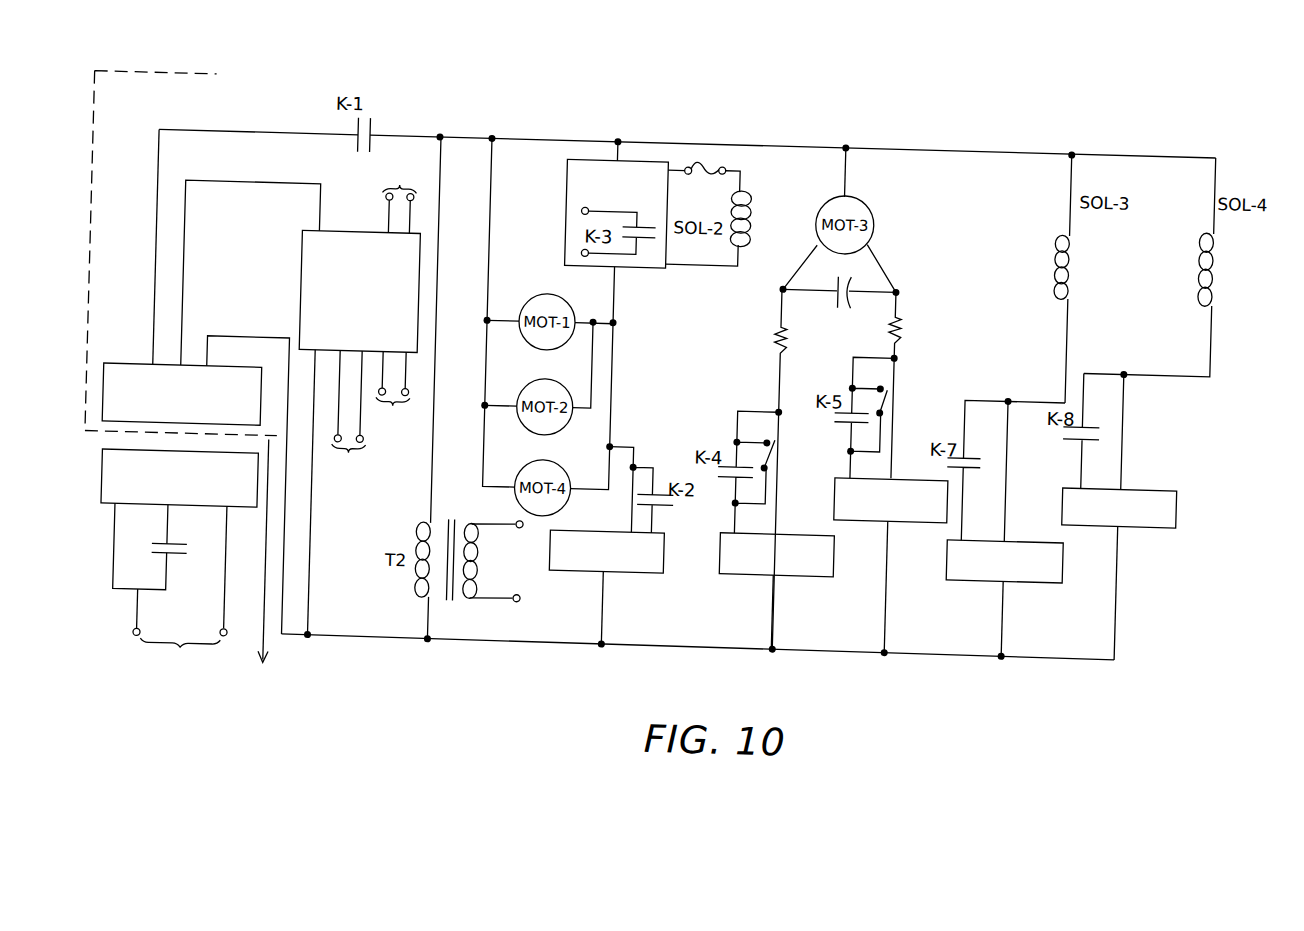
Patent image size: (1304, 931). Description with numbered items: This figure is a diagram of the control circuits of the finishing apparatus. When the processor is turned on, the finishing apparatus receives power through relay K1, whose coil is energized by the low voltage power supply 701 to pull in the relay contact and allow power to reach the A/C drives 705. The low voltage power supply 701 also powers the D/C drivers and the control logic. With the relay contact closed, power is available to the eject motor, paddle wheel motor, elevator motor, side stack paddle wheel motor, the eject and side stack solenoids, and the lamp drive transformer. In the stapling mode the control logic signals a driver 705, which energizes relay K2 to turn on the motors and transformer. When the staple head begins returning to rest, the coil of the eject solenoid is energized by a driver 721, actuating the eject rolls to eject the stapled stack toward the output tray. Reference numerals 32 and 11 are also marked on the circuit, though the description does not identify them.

The control unit 32 is at (215, 97).
The power input module 11 is at (116, 537).
The low voltage power supply 701 is at (305, 269).
The A/C drives 705 is at (655, 580).
The driver 721 is at (991, 570).